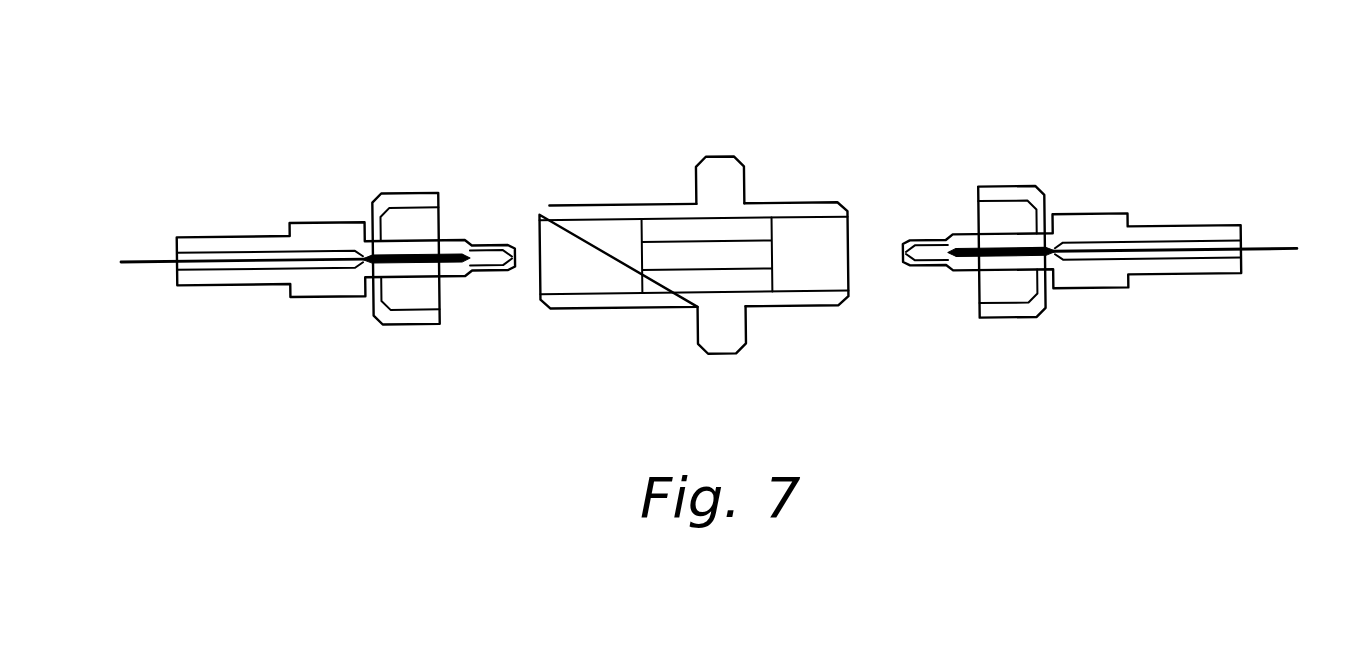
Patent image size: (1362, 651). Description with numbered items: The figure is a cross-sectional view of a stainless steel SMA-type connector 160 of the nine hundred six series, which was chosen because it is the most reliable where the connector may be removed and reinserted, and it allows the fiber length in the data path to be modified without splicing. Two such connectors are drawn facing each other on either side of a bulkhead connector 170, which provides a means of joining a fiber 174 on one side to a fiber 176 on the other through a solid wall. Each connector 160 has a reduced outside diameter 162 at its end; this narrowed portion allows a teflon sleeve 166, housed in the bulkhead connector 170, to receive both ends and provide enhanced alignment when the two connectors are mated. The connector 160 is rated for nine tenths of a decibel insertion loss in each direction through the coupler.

The 906 series connector 160 is at (116, 151).
The reduced outside diameter 162 is at (480, 276).
The teflon sleeve 166 is at (751, 228).
The bulkhead connector 170 is at (640, 308).
The fiber 174 is at (145, 265).
The fiber 176 is at (1273, 250).